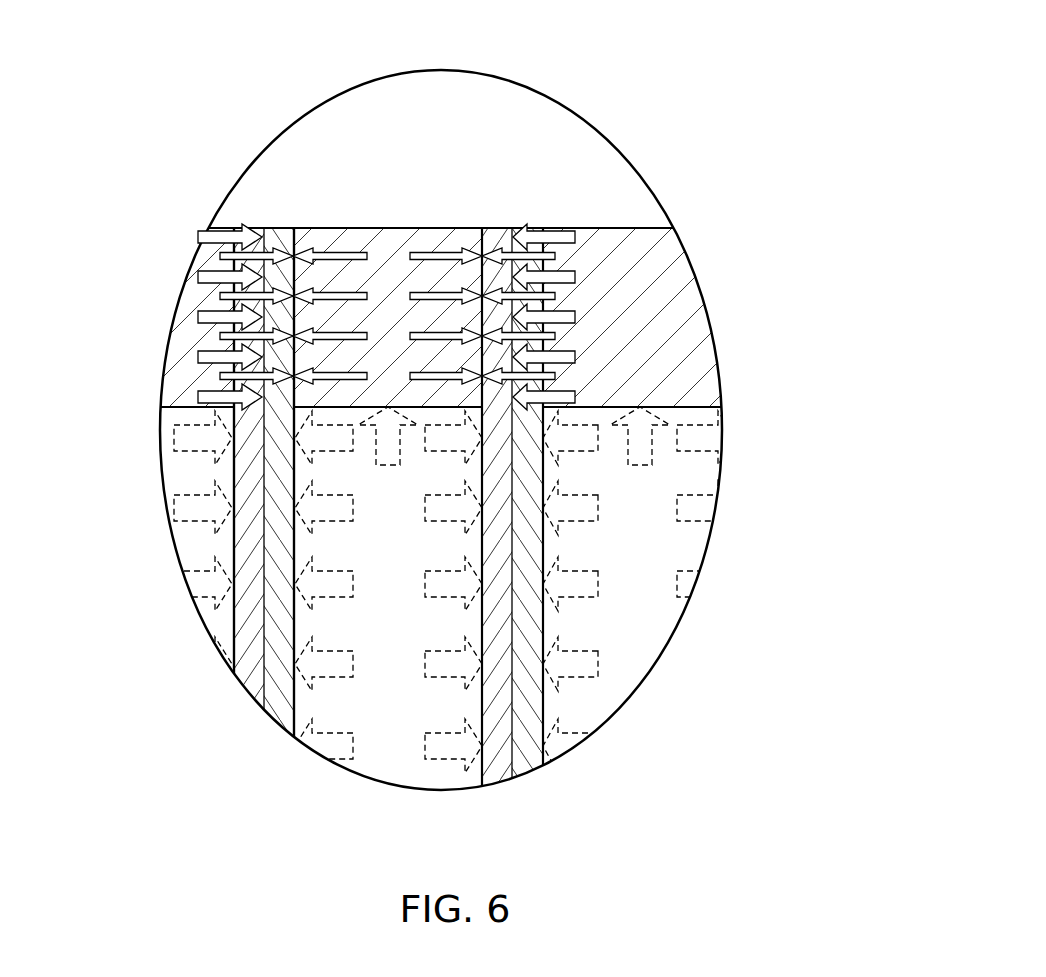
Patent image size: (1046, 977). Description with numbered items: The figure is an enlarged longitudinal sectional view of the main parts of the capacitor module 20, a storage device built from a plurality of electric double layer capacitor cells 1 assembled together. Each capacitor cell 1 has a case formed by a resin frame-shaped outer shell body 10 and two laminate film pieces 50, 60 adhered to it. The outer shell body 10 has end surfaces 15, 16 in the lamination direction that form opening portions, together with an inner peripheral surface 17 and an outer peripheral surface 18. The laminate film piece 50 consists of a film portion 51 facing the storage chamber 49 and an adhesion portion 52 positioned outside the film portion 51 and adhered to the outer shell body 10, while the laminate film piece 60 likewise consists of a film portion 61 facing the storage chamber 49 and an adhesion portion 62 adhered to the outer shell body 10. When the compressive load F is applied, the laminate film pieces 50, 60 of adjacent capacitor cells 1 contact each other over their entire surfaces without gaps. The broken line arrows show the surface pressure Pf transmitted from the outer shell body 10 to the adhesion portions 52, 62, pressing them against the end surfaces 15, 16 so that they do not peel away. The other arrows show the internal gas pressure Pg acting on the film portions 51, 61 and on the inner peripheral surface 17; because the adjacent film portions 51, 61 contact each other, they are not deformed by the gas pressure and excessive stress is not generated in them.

The electric double layer capacitor cell 1 is at (400, 212).
The outer shell body 10 is at (383, 229).
The end surface 15 is at (293, 258).
The end surface 16 is at (495, 250).
The inner peripheral surface 17 is at (690, 408).
The outer peripheral surface 18 is at (622, 250).
The capacitor module 20 is at (656, 209).
The storage chamber 49 is at (333, 700).
The laminate film piece 50 is at (88, 337).
The film portion 51 is at (276, 484).
The adhesion portion 52 is at (232, 345).
The laminate film piece 60 is at (240, 554).
The film portion 61 is at (493, 427).
The adhesion portion 62 is at (515, 343).